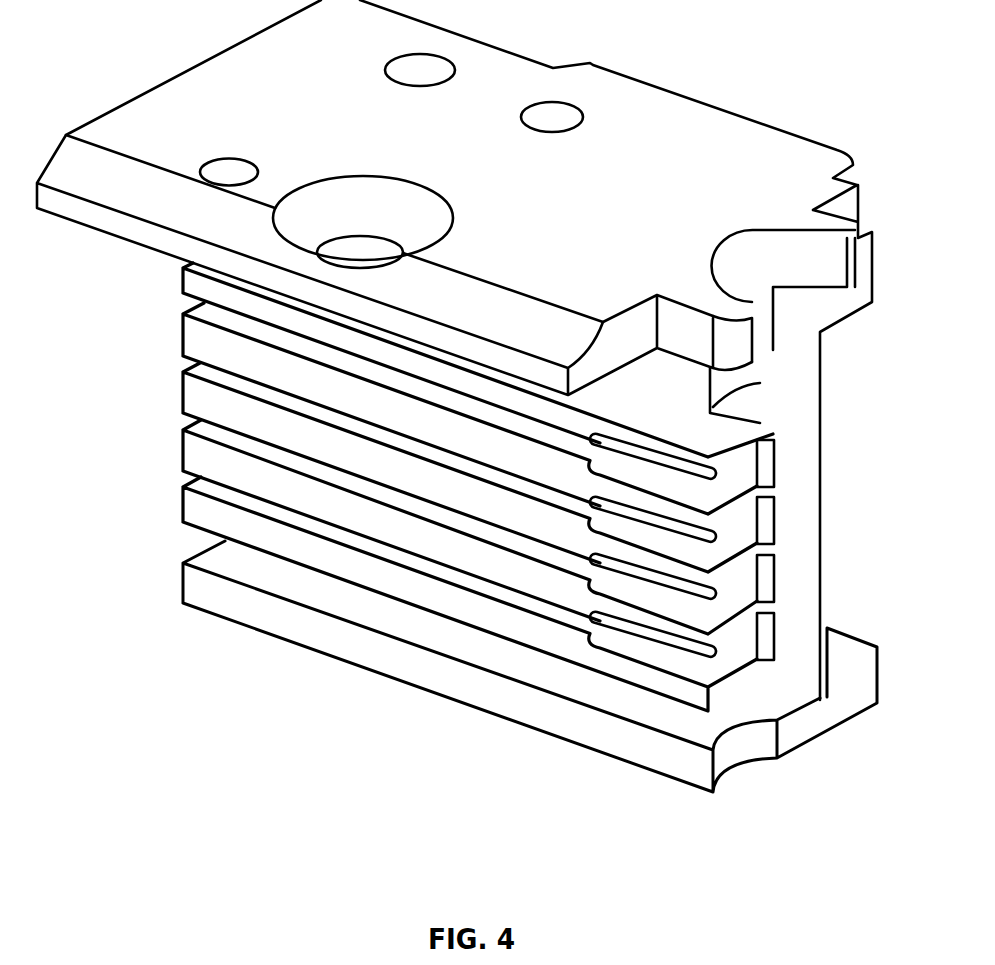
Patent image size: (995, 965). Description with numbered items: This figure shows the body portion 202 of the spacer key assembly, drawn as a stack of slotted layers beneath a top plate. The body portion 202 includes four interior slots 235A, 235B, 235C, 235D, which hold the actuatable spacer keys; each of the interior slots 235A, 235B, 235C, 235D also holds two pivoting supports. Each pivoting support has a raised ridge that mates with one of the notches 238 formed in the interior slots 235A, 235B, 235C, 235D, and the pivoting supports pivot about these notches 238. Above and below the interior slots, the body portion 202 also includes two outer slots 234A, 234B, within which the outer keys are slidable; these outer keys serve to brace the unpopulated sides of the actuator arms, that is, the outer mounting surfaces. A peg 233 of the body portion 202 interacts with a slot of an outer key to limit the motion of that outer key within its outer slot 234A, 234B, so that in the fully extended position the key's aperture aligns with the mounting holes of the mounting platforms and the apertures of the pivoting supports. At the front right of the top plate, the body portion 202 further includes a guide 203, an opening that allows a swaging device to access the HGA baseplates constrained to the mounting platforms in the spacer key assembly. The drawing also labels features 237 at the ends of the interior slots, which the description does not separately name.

The body portion 202 is at (535, 204).
The guide 203 is at (776, 243).
The peg 233 is at (300, 575).
The outer slot 234A is at (170, 263).
The outer slot 234B is at (170, 547).
The interior slot 235A is at (172, 307).
The interior slot 235B is at (172, 363).
The interior slot 235C is at (172, 422).
The interior slot 235D is at (176, 483).
The tabs 237 is at (618, 633).
The notch 238 is at (773, 468).